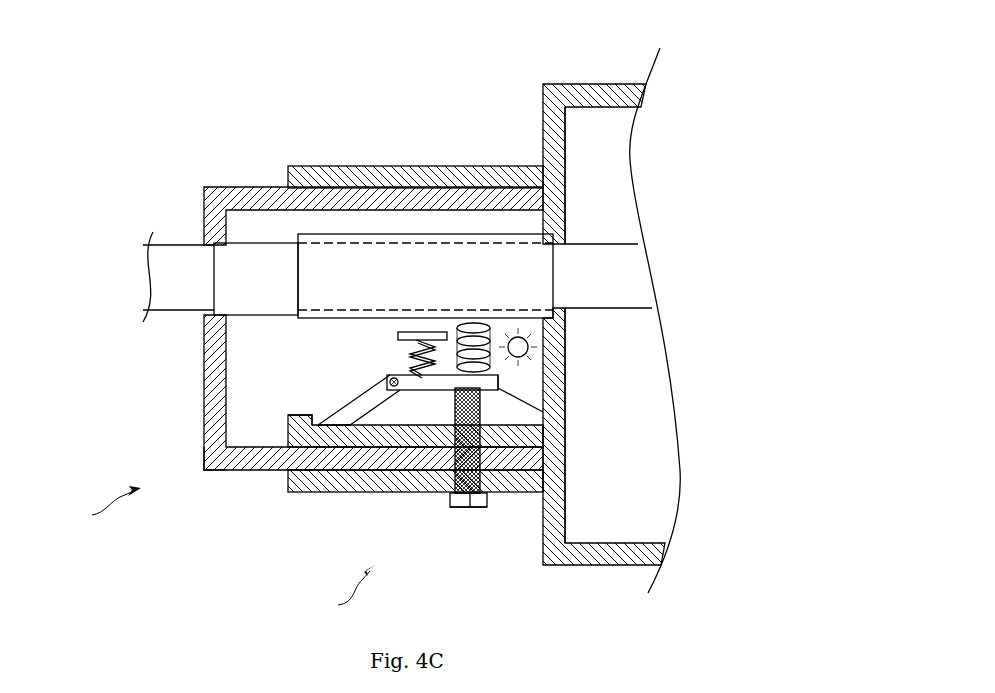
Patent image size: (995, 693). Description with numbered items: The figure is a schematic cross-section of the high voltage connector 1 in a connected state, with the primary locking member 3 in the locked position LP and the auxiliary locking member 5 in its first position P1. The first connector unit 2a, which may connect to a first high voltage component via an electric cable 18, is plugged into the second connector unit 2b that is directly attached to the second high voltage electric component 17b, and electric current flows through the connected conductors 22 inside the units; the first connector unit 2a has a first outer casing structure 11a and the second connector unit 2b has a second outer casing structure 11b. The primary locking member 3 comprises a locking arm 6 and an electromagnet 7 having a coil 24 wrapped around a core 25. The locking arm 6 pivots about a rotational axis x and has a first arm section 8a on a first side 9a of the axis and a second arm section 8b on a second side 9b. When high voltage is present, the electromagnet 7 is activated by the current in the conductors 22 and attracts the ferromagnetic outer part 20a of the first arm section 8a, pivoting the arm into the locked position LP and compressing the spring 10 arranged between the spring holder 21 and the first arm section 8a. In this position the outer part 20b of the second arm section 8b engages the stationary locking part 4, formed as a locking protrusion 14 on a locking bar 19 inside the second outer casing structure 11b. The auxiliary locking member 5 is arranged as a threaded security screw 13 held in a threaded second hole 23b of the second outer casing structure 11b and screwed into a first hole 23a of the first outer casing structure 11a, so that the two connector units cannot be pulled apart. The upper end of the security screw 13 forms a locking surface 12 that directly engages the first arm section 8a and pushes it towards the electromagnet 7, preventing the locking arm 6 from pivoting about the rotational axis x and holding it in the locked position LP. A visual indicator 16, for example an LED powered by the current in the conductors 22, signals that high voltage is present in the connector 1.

The high voltage connector 1 is at (404, 58).
The first connector unit 2a is at (222, 187).
The second connector unit 2b is at (368, 166).
The primary locking member 3 is at (272, 400).
The locking arm 6 is at (362, 396).
The stationary locking part 4 is at (288, 435).
The auxiliary locking member 5 is at (470, 508).
The electromagnet 7 is at (566, 321).
The first arm section 8a is at (625, 394).
The first side 9a is at (500, 388).
The second arm section 8b is at (237, 410).
The second side 9b is at (320, 418).
The spring 10 is at (408, 356).
The first outer casing structure 11a is at (215, 470).
The second outer casing structure 11b is at (356, 492).
The locking surface 12 is at (565, 425).
The threaded security screw 13 is at (478, 508).
The locking protrusion 14 is at (290, 414).
The visual indicator 16 is at (531, 347).
The second high voltage electric component 17b is at (603, 84).
The electric cable 18 is at (176, 245).
The locking bar 19 is at (565, 443).
The outer part of the first arm section 20a is at (565, 392).
The outer part of the second arm section 20b is at (313, 470).
The spring holder 21 is at (398, 335).
The conductors 22 is at (258, 243).
The first hole 23a is at (432, 490).
The second hole 23b is at (443, 493).
The coil 24 is at (500, 382).
The core 25 is at (483, 322).
The rotational axis x is at (390, 380).
The locked position LP is at (103, 505).
The first position P1 is at (344, 590).